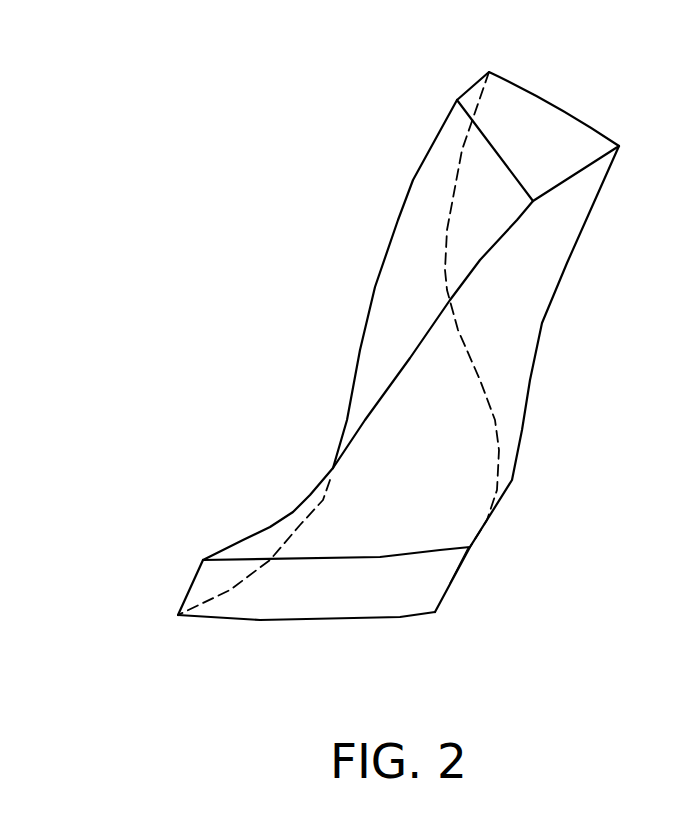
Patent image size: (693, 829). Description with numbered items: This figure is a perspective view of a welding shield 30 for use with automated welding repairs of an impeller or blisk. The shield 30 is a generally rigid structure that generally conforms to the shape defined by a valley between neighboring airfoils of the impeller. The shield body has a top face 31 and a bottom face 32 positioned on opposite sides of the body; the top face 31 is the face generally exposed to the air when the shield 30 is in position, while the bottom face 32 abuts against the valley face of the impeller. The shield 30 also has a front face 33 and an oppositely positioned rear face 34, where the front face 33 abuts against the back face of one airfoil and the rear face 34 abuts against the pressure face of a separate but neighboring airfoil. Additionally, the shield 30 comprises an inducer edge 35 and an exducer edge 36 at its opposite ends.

The shield 30 is at (212, 229).
The top face 31 is at (267, 537).
The bottom face 32 is at (402, 602).
The front face 33 is at (381, 287).
The rear face 34 is at (553, 263).
The inducer edge 35 is at (549, 106).
The exducer edge 36 is at (275, 612).